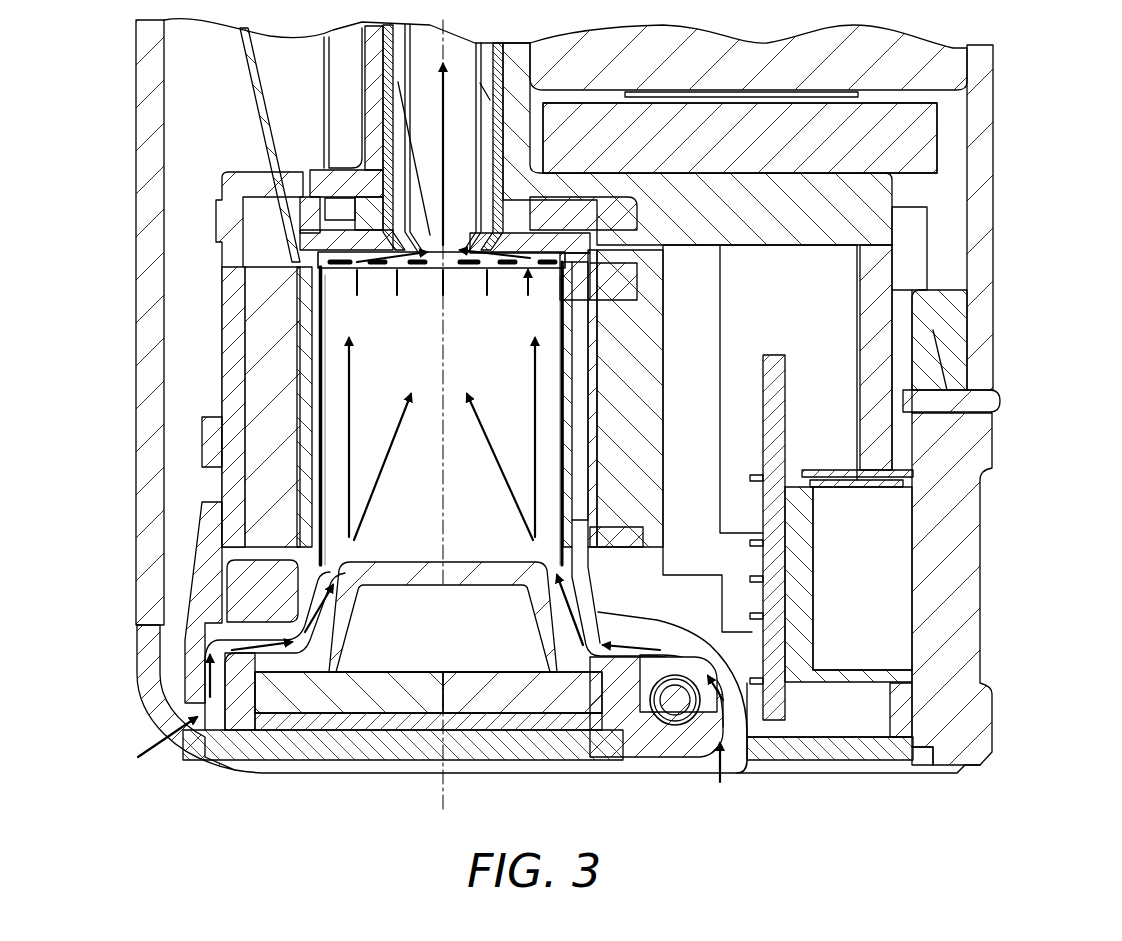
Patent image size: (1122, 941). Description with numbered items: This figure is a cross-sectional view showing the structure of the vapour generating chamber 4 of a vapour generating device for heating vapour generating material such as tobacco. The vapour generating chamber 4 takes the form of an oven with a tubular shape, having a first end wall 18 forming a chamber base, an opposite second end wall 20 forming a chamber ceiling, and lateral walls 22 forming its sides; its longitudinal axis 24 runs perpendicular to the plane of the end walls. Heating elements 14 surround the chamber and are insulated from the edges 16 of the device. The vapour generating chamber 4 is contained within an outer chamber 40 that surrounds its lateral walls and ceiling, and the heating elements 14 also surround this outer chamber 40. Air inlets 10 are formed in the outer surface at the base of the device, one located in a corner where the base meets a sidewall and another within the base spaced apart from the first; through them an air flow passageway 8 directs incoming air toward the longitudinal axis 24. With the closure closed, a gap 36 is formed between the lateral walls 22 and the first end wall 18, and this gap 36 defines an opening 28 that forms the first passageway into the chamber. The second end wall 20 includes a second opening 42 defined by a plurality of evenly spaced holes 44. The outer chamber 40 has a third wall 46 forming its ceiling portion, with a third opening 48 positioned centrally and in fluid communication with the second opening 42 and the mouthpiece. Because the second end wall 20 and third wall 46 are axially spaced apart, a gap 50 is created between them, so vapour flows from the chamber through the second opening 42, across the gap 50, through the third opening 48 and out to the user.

The vapour generating chamber 4 is at (570, 380).
The air flow passageway 8 is at (735, 660).
The air inlet 10 is at (708, 765).
The heating elements 14 is at (630, 315).
The edges of the vapour generating device 16 is at (136, 76).
The first end wall 18 is at (415, 572).
The second end wall 20 is at (505, 282).
The lateral walls 22 is at (315, 392).
The longitudinal axis 24 is at (440, 342).
The opening 28 is at (548, 572).
The gap 36 is at (322, 612).
The outer chamber 40 is at (570, 262).
The second opening 42 is at (290, 235).
The holes 44 is at (345, 270).
The third wall 46 is at (335, 250).
The third opening 48 is at (420, 245).
The gap 50 is at (535, 262).